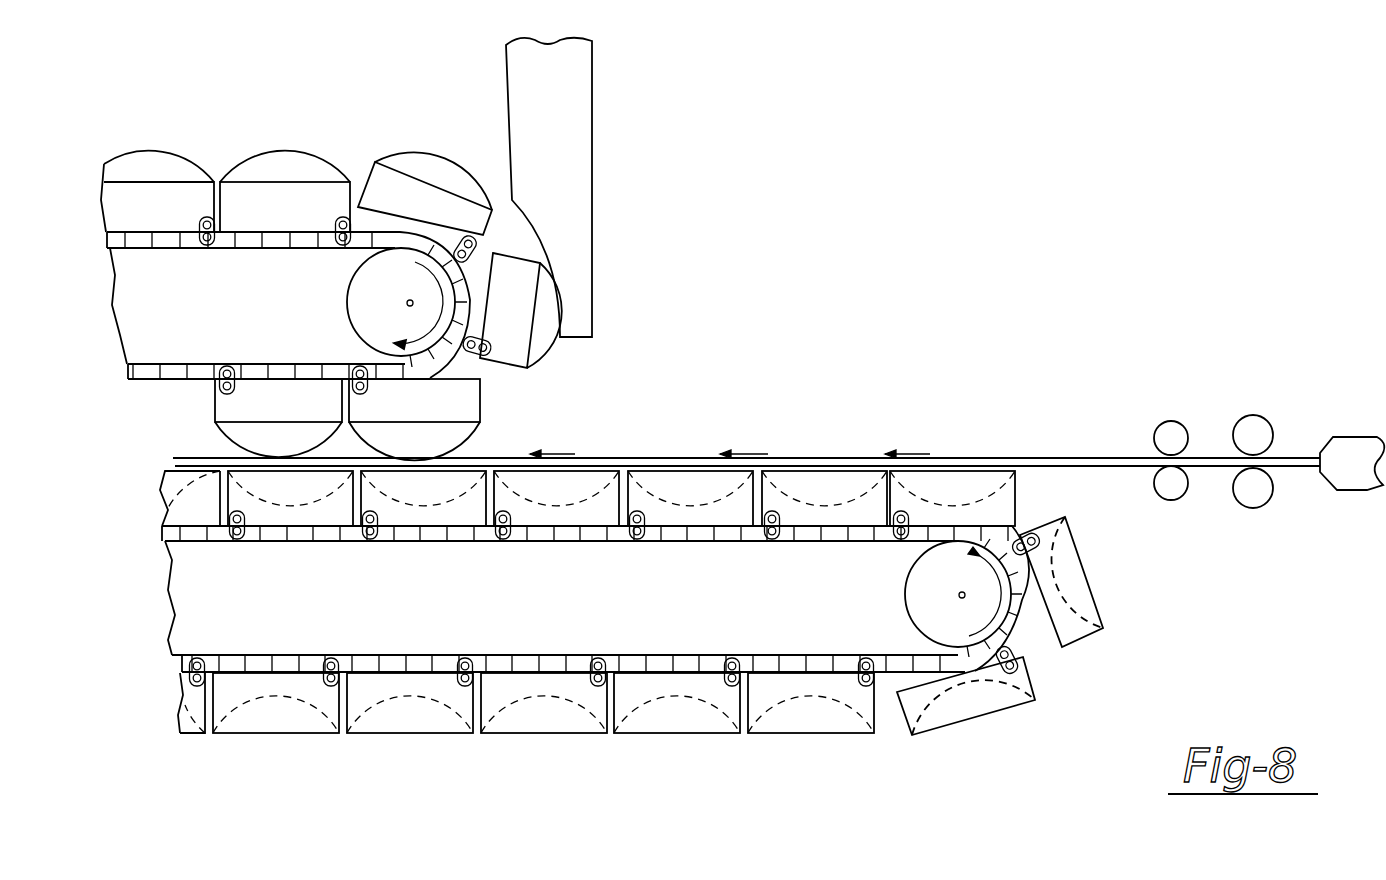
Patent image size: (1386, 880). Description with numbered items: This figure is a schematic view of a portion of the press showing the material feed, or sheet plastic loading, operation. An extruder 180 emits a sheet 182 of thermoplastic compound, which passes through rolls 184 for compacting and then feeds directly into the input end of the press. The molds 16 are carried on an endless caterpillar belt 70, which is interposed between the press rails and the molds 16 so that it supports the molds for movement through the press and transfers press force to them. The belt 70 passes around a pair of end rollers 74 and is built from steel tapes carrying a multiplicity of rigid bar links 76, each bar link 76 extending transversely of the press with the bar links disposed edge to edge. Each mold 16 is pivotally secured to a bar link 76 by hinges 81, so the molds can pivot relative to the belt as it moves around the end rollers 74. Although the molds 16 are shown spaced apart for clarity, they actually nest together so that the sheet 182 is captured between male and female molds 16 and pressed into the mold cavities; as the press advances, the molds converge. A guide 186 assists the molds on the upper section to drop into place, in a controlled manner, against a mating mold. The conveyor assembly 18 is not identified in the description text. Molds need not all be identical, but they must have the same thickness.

The mold 16 is at (438, 152).
The conveyor 18 is at (601, 535).
The caterpillar belt 70 is at (797, 548).
The end roller 74 is at (907, 617).
The bar link 76 is at (880, 540).
The hinge 81 is at (650, 538).
The extruder 180 is at (1333, 487).
The sheet 182 is at (1058, 457).
The rolls 184 is at (1234, 420).
The guide 186 is at (593, 183).